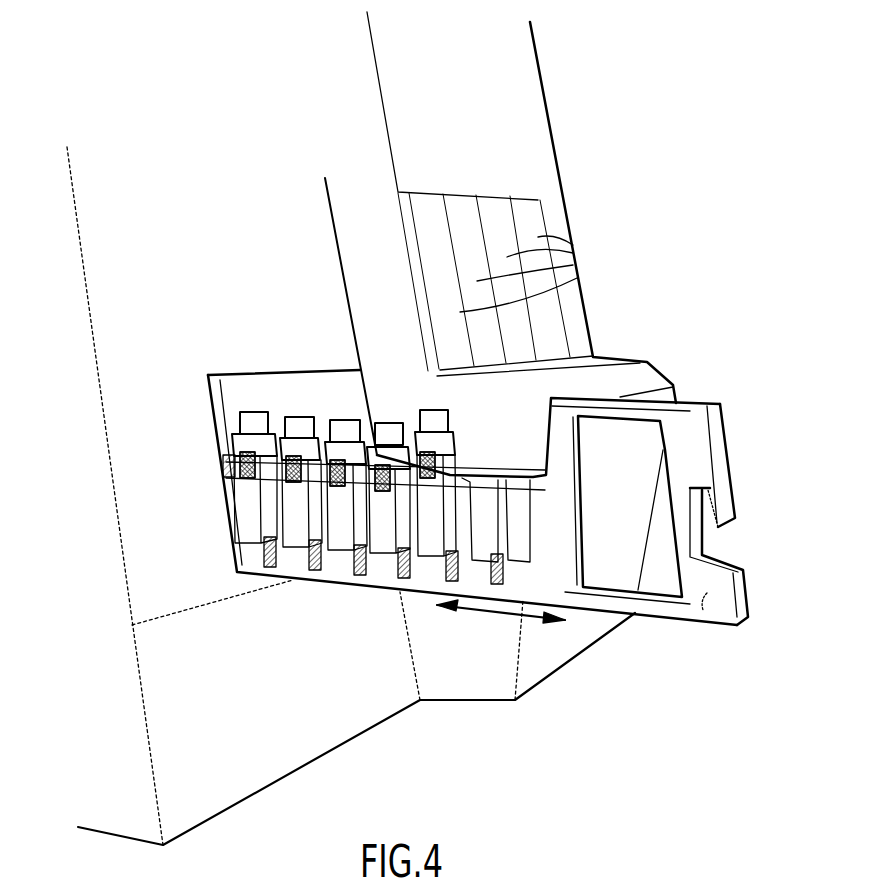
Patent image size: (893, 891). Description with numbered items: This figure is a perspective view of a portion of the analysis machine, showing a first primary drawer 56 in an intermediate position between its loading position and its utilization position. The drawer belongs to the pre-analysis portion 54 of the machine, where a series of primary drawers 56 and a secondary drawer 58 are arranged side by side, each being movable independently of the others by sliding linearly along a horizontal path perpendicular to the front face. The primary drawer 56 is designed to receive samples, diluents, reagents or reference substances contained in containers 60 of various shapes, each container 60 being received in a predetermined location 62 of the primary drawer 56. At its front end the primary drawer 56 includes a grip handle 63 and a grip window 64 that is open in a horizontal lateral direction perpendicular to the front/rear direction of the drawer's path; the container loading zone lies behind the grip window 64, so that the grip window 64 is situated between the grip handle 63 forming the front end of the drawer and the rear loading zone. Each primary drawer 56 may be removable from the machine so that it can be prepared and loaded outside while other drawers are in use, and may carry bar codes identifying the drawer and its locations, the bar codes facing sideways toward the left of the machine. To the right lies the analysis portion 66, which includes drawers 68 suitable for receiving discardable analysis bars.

The pre-analysis portion 54 is at (122, 600).
The primary drawer 56 is at (253, 395).
The secondary drawer 58 is at (321, 384).
The container 60 is at (422, 413).
The predetermined location 62 is at (500, 472).
The grip handle 63 is at (712, 625).
The grip window 64 is at (593, 543).
The analysis portion 66 is at (593, 318).
The drawer 68 is at (577, 266).